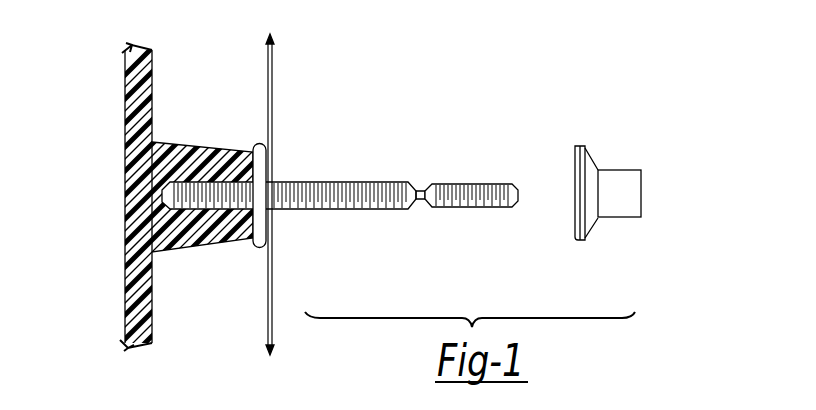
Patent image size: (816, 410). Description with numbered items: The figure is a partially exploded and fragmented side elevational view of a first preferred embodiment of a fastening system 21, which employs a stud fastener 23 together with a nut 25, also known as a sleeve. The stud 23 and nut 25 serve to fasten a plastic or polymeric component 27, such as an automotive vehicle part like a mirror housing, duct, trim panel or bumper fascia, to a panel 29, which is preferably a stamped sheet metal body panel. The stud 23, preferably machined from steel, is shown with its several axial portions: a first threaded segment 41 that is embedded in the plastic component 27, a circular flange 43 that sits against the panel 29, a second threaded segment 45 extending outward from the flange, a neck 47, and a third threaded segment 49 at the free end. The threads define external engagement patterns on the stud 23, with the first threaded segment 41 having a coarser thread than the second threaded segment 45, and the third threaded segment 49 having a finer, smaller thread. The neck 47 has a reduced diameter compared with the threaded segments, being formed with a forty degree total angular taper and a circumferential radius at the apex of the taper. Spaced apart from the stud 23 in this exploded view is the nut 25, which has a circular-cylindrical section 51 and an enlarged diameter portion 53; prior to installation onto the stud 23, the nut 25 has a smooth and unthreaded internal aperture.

The fastening system 21 is at (667, 124).
The stud fastener 23 is at (320, 182).
The nut 25 is at (638, 201).
The plastic component 27 is at (124, 100).
The panel 29 is at (273, 99).
The first threaded segment 41 is at (208, 197).
The circular flange 43 is at (258, 143).
The second threaded segment 45 is at (370, 205).
The neck 47 is at (420, 186).
The third threaded segment 49 is at (490, 184).
The circular-cylindrical section 51 is at (612, 172).
The enlarged diameter portion 53 is at (577, 242).